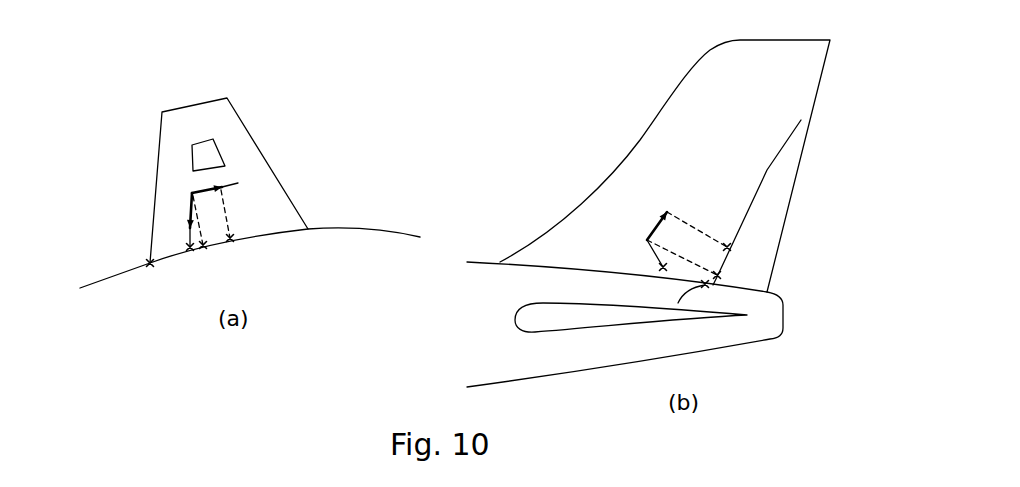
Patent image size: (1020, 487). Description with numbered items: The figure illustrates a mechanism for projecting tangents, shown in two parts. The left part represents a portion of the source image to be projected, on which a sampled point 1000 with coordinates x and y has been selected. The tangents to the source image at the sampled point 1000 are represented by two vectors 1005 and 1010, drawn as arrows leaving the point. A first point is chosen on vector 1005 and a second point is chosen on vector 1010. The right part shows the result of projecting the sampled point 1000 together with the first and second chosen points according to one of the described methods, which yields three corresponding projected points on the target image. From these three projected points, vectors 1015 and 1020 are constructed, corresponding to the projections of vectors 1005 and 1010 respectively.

The sampled point 1000 is at (151, 205).
The tangent vector 1005 is at (193, 193).
The tangent vector 1010 is at (203, 190).
The projected vector 1015 is at (623, 223).
The projected vector 1020 is at (645, 245).